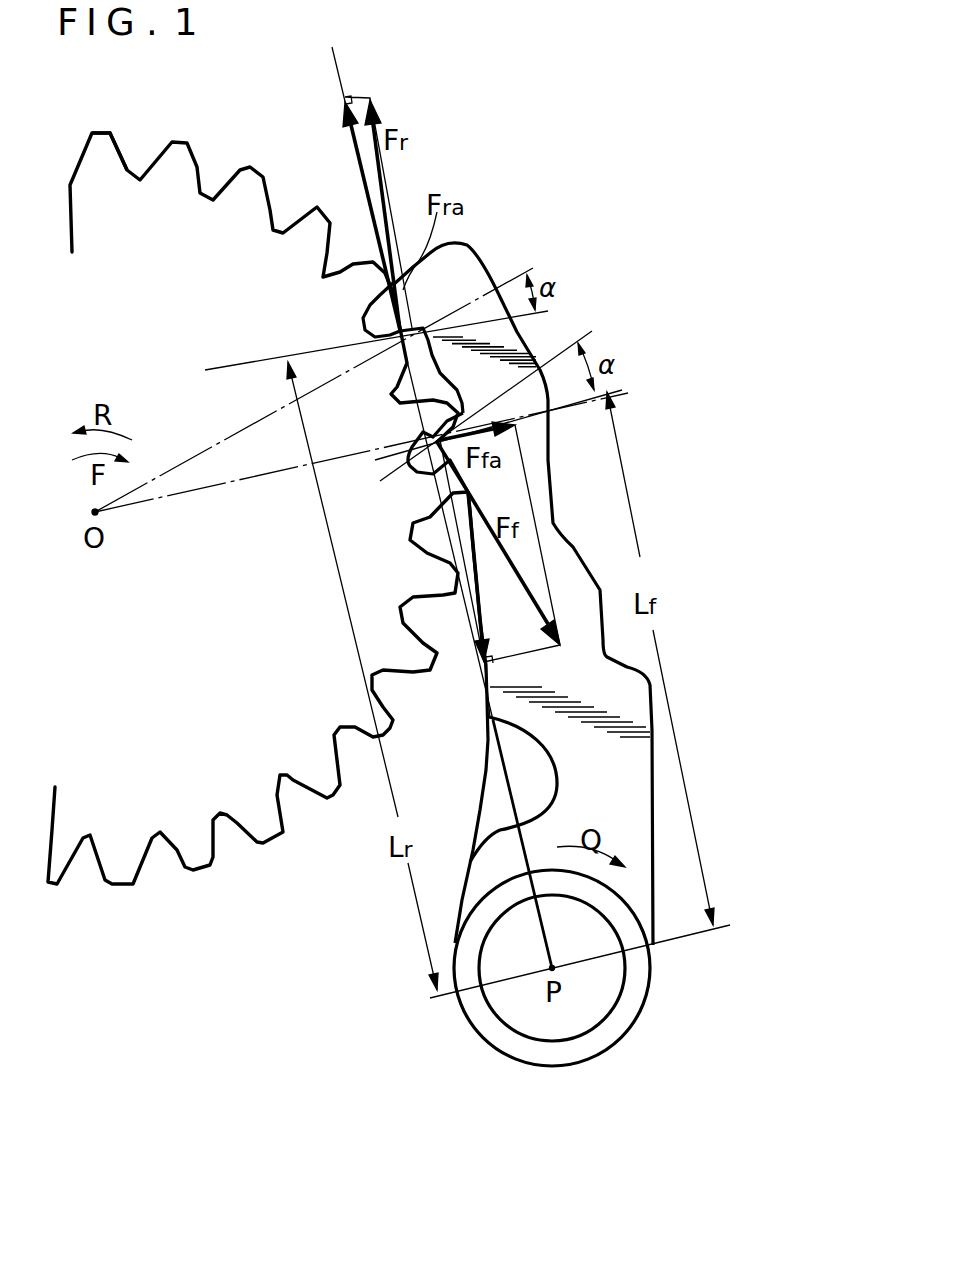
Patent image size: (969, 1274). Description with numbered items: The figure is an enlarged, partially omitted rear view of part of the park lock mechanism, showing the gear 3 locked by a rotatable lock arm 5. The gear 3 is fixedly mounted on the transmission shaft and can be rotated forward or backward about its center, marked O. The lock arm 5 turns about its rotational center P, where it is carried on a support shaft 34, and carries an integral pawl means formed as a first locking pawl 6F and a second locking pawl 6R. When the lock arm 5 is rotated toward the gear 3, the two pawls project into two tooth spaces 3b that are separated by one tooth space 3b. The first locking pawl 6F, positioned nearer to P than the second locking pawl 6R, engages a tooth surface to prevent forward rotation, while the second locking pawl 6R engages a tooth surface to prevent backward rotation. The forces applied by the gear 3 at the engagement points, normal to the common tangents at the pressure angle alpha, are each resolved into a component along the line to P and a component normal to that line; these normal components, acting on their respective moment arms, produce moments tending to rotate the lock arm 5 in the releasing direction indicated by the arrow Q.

The gear 3 is at (188, 788).
The tooth space 3b is at (280, 208).
The lock arm 5 is at (560, 583).
The second locking pawl 6R is at (385, 312).
The first locking pawl 6F is at (408, 466).
The support shaft 34 is at (520, 995).